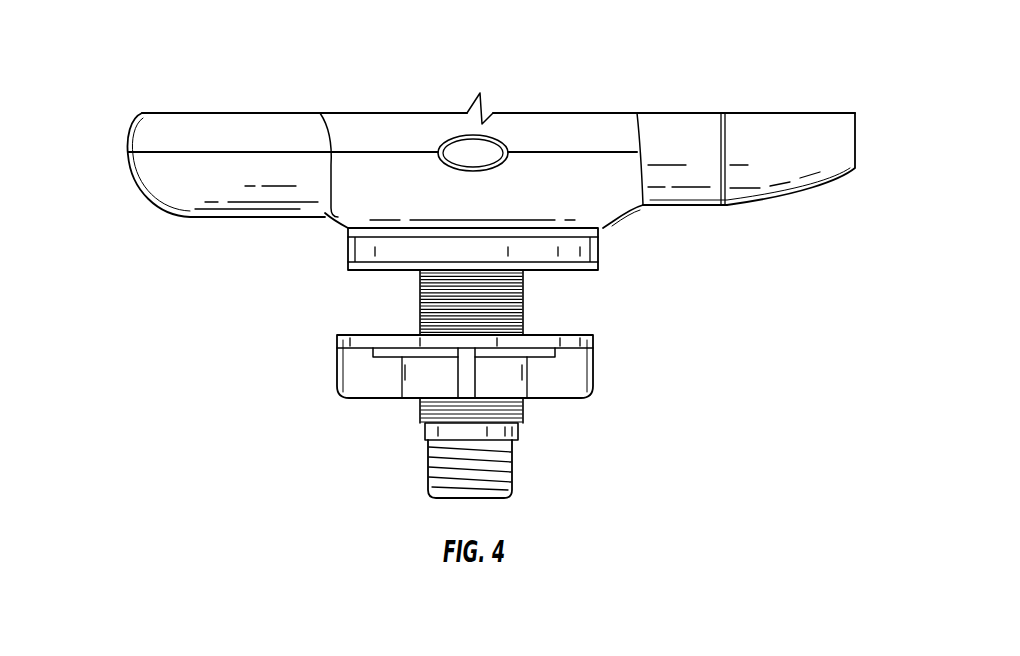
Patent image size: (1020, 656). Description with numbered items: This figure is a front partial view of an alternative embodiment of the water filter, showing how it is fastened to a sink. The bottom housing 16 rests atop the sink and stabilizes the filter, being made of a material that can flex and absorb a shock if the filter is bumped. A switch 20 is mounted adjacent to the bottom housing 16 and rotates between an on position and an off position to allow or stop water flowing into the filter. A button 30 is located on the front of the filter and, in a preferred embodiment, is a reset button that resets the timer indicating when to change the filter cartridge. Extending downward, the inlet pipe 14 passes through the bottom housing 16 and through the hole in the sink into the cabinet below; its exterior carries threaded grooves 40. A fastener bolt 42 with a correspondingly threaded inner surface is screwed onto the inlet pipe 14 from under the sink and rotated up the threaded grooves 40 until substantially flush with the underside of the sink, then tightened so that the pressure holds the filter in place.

The inlet pipe 14 is at (517, 460).
The bottom housing 16 is at (182, 175).
The switch 20 is at (772, 150).
The button 30 is at (475, 145).
The threaded grooves 40 is at (523, 293).
The fastener bolt 42 is at (570, 377).